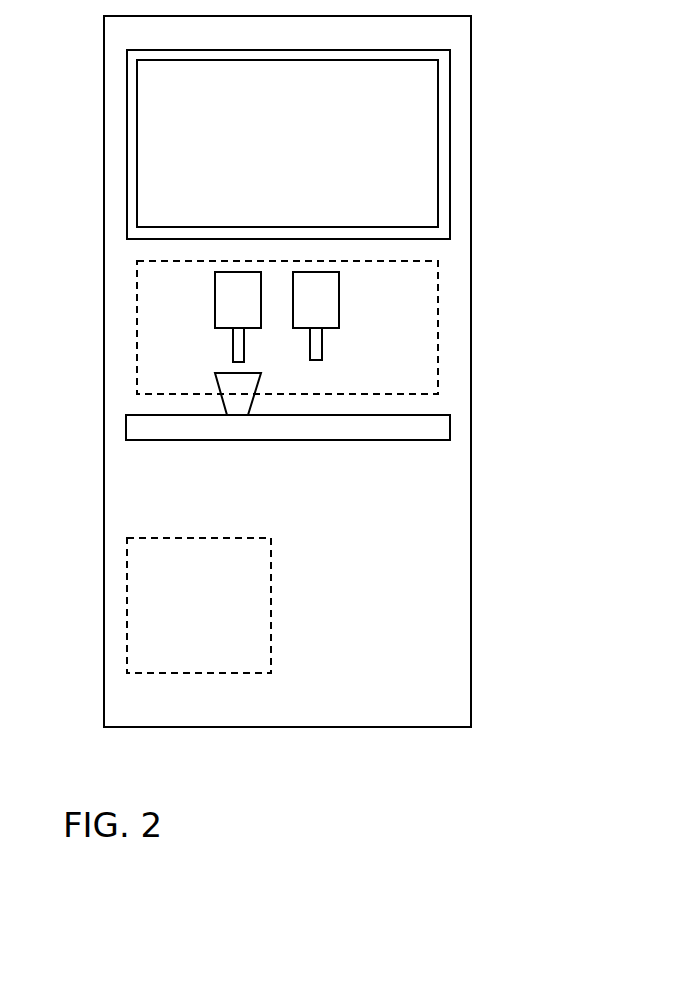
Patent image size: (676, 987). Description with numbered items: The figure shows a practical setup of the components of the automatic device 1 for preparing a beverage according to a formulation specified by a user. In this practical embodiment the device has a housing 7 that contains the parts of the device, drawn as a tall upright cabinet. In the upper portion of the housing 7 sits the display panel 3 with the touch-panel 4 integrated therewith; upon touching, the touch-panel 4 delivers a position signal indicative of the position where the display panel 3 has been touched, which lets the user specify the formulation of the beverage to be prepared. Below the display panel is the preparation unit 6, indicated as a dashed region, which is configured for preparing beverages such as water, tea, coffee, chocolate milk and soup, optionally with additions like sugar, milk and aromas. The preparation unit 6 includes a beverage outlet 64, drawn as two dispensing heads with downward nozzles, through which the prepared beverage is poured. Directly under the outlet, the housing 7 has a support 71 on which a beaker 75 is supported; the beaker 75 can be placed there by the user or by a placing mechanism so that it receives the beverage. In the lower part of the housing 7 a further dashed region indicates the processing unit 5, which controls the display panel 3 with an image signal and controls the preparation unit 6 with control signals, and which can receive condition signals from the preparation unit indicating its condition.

The automatic device 1 is at (92, 367).
The display panel 3 is at (450, 148).
The touch-panel 4 is at (438, 93).
The processing unit 5 is at (127, 606).
The preparation unit 6 is at (438, 305).
The housing 7 is at (471, 582).
The beverage outlet 64 is at (238, 348).
The support 71 is at (438, 428).
The beaker 75 is at (238, 382).